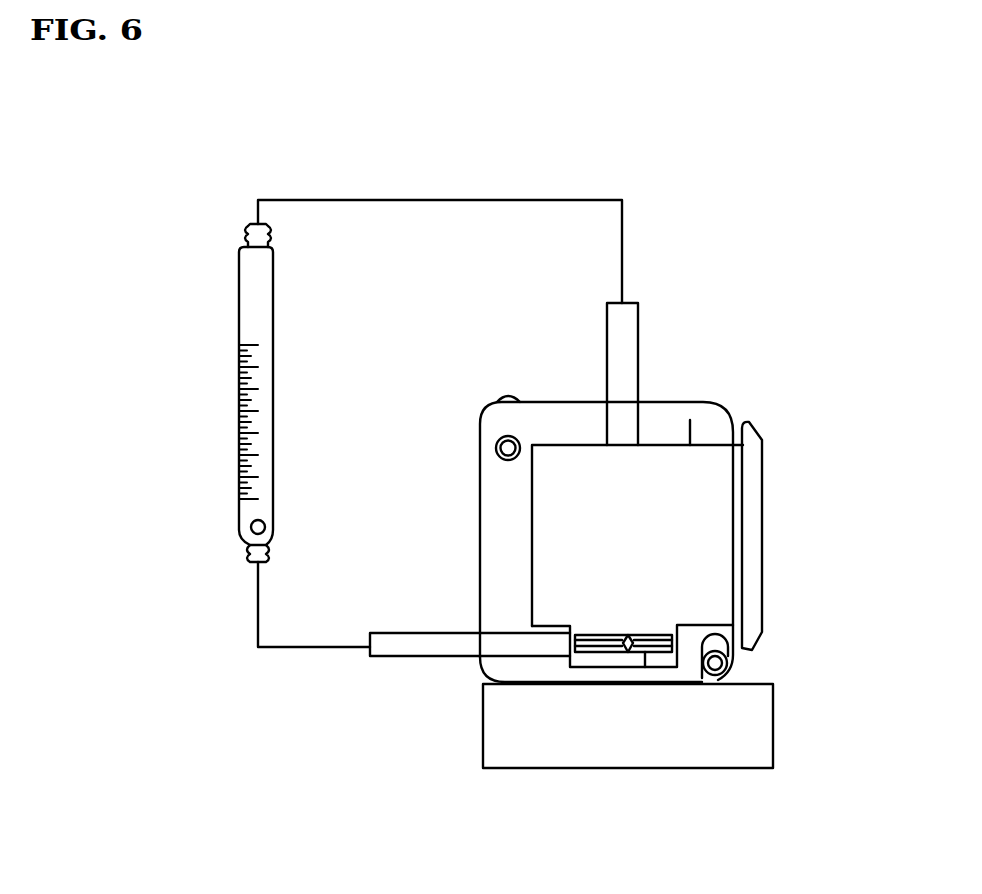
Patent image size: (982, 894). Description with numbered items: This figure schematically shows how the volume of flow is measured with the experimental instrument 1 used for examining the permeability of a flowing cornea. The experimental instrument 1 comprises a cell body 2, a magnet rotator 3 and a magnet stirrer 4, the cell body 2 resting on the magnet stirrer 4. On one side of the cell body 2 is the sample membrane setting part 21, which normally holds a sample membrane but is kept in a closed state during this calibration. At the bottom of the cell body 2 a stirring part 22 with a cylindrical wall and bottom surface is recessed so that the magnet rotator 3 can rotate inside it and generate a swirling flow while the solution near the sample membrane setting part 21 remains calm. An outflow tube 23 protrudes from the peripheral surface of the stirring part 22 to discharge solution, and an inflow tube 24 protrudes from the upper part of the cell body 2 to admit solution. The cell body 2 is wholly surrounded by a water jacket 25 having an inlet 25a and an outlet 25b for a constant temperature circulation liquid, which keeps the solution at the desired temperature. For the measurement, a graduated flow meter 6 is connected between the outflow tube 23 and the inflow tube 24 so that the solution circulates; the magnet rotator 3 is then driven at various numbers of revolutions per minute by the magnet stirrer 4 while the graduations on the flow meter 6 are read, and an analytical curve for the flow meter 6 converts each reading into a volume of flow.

The experimental instrument 1 is at (484, 326).
The cell body 2 is at (690, 445).
The sample membrane setting part 21 is at (764, 490).
The stirring part 22 is at (652, 634).
The outflow tube 23 is at (402, 653).
The inflow tube 24 is at (632, 322).
The water jacket 25 is at (488, 499).
The inlet of constant temperature circulation liquid 25a is at (726, 650).
The outlet of constant temperature circulation liquid 25b is at (505, 396).
The magnet rotator 3 is at (592, 653).
The magnet stirrer 4 is at (680, 755).
The flow meter 6 is at (238, 325).